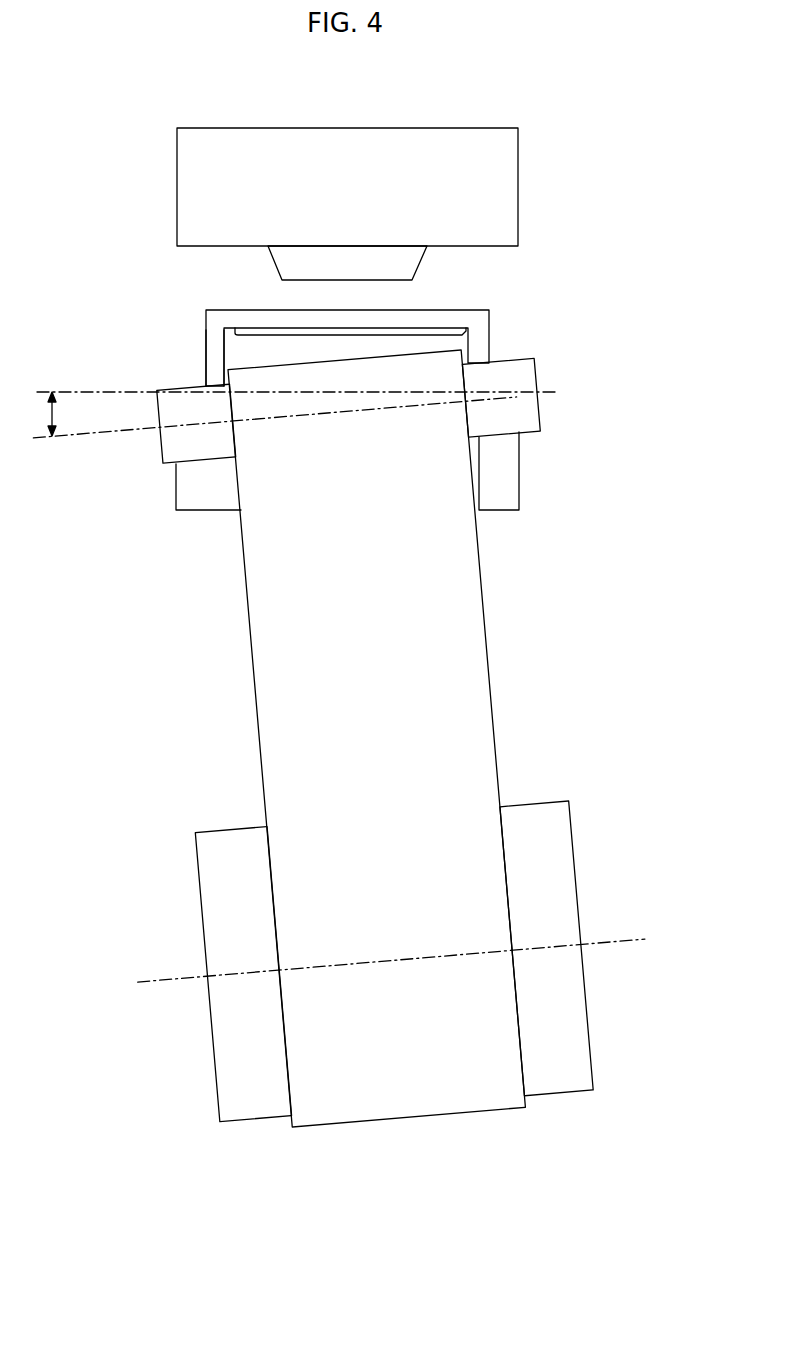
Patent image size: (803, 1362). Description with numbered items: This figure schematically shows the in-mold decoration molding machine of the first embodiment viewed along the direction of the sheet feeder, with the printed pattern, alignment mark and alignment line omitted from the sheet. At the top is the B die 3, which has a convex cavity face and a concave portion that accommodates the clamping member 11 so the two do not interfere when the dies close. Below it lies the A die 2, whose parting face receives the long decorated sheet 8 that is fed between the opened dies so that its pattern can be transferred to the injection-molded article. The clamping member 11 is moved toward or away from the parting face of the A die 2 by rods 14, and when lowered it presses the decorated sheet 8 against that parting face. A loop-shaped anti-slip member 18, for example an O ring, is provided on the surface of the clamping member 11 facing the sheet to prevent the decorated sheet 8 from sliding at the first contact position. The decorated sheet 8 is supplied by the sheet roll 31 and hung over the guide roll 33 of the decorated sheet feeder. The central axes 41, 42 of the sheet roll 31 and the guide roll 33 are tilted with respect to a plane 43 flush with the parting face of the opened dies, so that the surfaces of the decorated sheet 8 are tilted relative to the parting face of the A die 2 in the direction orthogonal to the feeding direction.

The A die 2 is at (185, 501).
The B die 3 is at (468, 141).
The decorated sheet 8 is at (465, 613).
The clamping member 11 is at (451, 306).
The rods 14 is at (215, 354).
The loop-shaped anti-slip member 18 is at (263, 333).
The sheet roll 31 is at (203, 842).
The guide roll 33 is at (532, 368).
The central axis 41 is at (617, 937).
The central axis 42 is at (75, 442).
The plane 43 is at (73, 390).